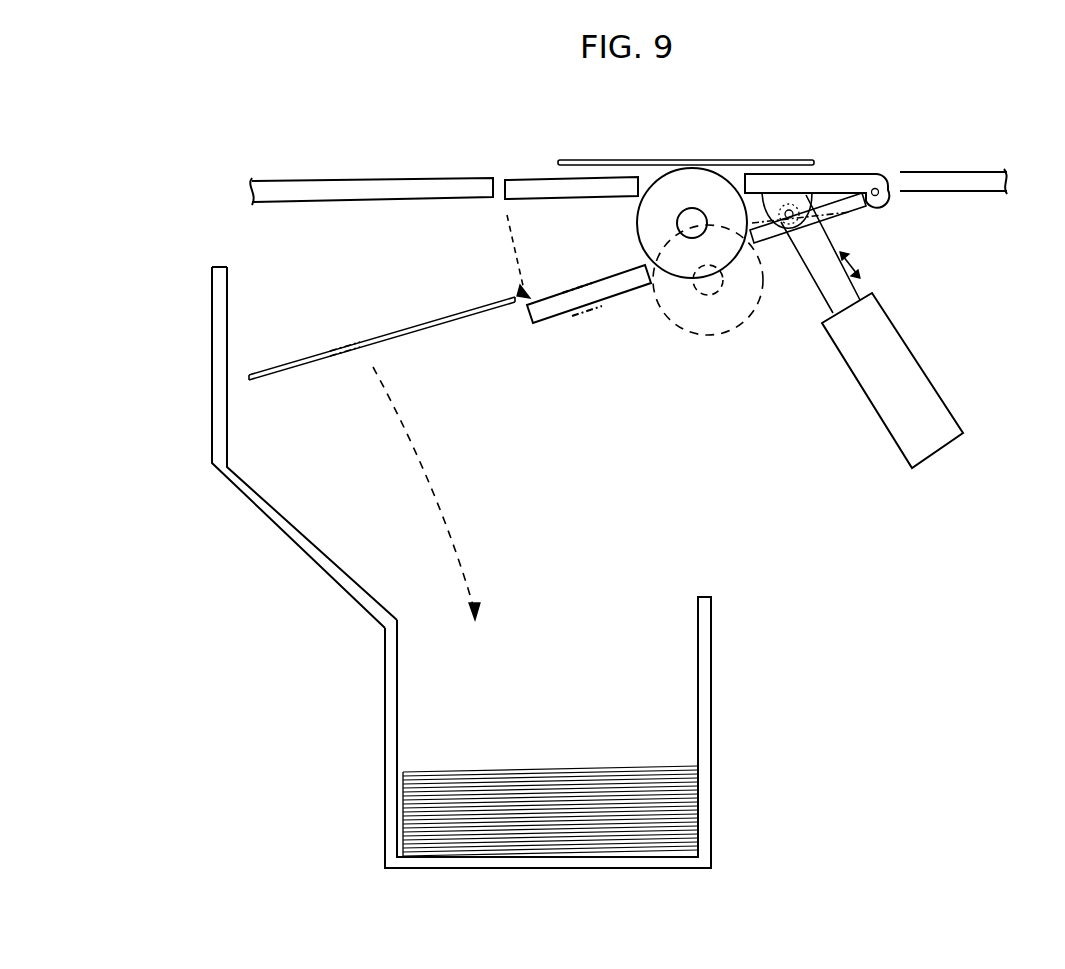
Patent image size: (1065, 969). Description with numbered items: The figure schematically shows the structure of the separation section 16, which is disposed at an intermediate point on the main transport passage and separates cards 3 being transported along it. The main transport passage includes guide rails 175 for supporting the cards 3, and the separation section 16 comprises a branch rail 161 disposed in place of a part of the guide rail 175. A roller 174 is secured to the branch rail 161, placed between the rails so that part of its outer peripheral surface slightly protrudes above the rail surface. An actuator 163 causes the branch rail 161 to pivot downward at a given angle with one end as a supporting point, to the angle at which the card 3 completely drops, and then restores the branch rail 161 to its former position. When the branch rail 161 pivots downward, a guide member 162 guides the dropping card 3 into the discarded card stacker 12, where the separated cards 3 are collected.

The separation section 16 is at (335, 153).
The card 3 is at (758, 162).
The roller 174 is at (684, 279).
The branch rail 161 is at (845, 172).
The actuator 163 is at (928, 377).
The guide rail 175 is at (978, 191).
The guide member 162 is at (212, 447).
The discarded card stacker 12 is at (711, 668).